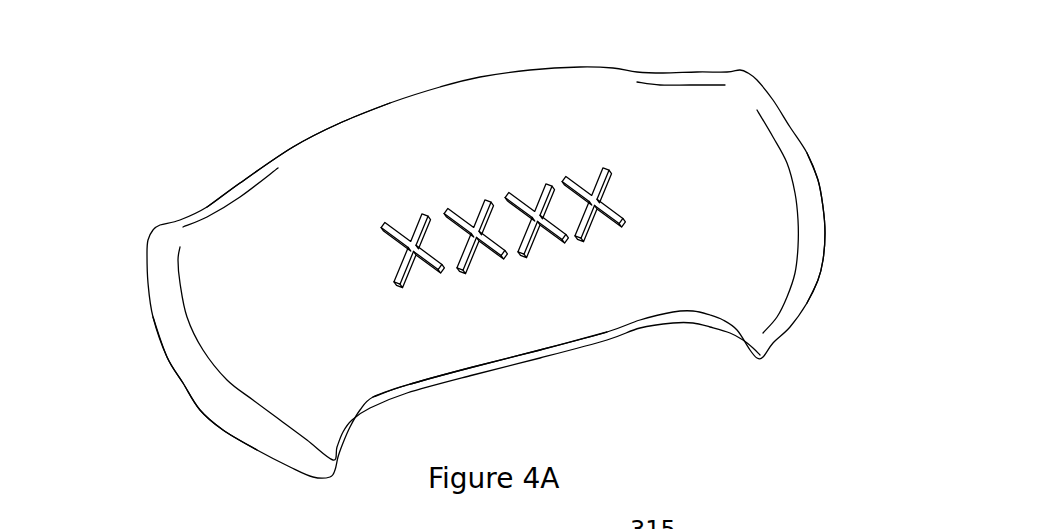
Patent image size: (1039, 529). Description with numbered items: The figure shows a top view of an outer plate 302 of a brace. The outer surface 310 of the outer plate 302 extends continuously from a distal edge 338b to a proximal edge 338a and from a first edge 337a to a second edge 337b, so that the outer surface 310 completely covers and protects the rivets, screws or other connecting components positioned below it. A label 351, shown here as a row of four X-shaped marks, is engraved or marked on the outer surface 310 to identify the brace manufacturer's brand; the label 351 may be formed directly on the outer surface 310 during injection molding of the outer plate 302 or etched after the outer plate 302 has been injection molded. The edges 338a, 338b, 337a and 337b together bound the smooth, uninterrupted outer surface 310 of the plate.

The outer plate 302 is at (908, 106).
The outer surface 310 is at (770, 195).
The label 351 is at (458, 192).
The proximal edge 338a is at (293, 150).
The distal edge 338b is at (563, 347).
The first edge 337a is at (198, 412).
The second edge 337b is at (825, 228).